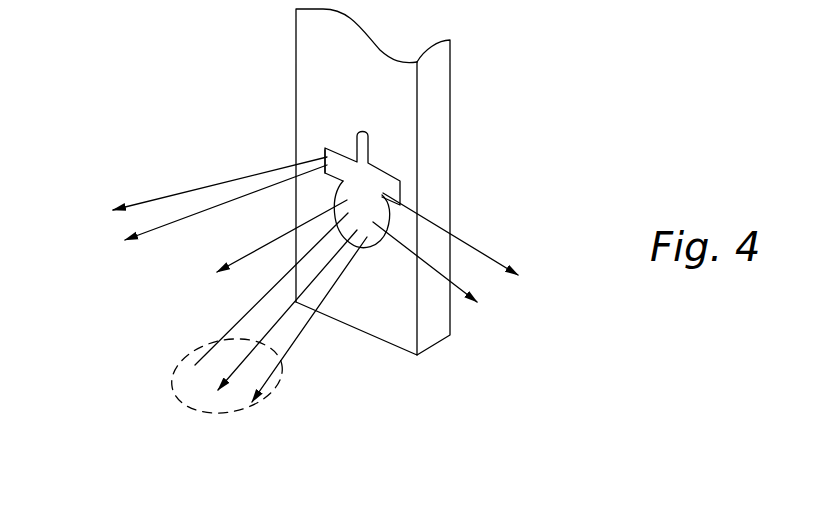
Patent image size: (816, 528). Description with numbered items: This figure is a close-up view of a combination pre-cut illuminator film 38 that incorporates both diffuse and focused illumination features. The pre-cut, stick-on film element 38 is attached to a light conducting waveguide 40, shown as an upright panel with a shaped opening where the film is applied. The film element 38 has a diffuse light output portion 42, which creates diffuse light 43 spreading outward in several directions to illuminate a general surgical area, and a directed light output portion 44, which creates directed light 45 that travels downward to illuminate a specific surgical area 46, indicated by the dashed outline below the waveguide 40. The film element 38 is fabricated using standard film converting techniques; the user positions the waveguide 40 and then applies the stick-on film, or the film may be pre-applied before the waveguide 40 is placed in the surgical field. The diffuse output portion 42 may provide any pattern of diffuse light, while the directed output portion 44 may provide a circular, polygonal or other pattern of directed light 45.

The pre-cut illuminator film 38 is at (332, 136).
The waveguide 40 is at (432, 195).
The diffuse light output portion 42 is at (327, 158).
The diffuse light 43 is at (200, 216).
The directed light output portion 44 is at (372, 242).
The directed light 45 is at (292, 344).
The specific surgical area 46 is at (237, 407).